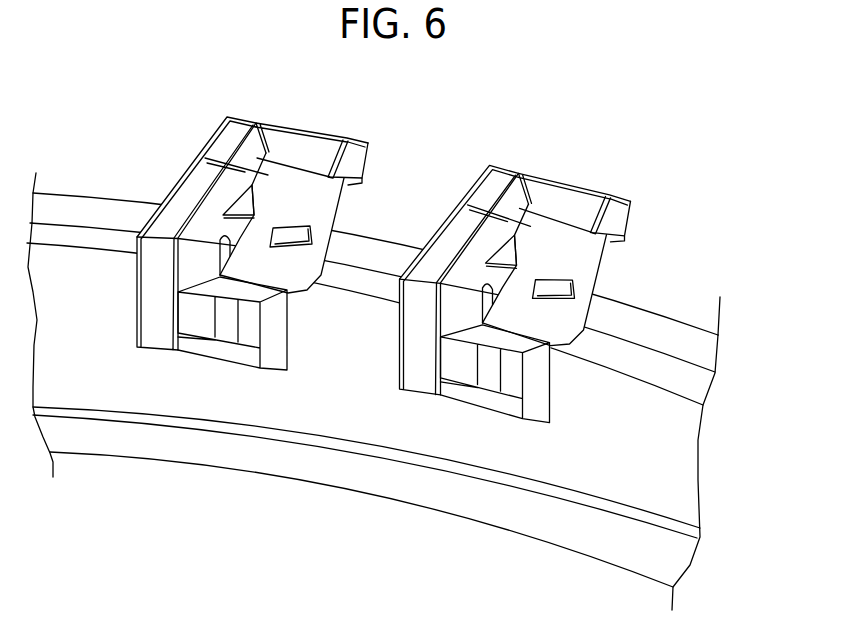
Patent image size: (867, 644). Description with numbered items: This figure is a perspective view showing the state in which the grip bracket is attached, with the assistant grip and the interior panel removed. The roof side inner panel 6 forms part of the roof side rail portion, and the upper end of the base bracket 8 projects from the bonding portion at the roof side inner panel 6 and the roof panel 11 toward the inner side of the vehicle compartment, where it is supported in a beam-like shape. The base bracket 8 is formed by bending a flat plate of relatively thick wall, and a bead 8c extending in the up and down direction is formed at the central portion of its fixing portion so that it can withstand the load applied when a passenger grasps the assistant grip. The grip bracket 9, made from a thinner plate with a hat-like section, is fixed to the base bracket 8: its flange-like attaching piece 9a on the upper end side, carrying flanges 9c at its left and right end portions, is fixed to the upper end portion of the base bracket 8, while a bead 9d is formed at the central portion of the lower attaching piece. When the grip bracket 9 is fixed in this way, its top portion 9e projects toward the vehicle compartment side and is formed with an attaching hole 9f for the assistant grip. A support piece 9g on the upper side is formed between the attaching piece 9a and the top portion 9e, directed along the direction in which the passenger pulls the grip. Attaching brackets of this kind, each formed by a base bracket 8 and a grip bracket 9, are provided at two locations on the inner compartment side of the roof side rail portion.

The roof side inner panel 6 is at (687, 469).
The roof panel 11 is at (707, 318).
The base bracket 8 is at (195, 183).
The bead 8c is at (222, 238).
The grip bracket 9 is at (288, 291).
The attaching piece 9a is at (285, 137).
The flange 9c is at (330, 152).
The bead 9d is at (227, 330).
The top portion 9e is at (323, 228).
The attaching hole 9f is at (303, 248).
The support piece 9g is at (334, 188).